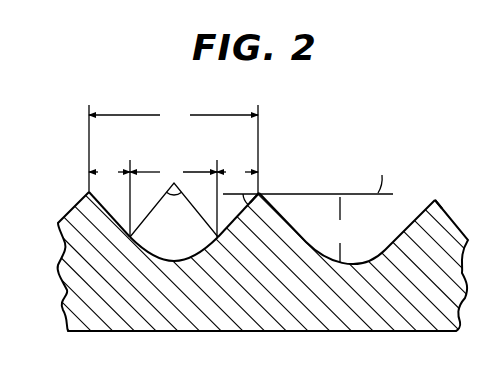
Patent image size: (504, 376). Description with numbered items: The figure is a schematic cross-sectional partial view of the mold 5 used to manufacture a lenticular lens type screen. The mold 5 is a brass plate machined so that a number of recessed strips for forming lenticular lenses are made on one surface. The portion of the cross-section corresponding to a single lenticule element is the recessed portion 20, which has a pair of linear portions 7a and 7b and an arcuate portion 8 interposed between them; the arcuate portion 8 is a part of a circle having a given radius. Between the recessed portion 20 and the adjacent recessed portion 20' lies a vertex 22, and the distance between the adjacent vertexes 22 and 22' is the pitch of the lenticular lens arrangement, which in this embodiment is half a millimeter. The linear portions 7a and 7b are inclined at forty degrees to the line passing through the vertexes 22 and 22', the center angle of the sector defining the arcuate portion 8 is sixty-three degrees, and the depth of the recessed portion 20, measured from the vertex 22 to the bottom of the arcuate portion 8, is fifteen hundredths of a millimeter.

The mold 5 is at (290, 351).
The recessed portion 20 is at (173, 157).
The adjacent recessed portion 20' is at (329, 176).
The linear portion 7a is at (104, 204).
The linear portion 7b is at (211, 206).
The arcuate portion 8 is at (143, 246).
The vertex 22 is at (284, 183).
The adjacent vertex 22' is at (453, 184).